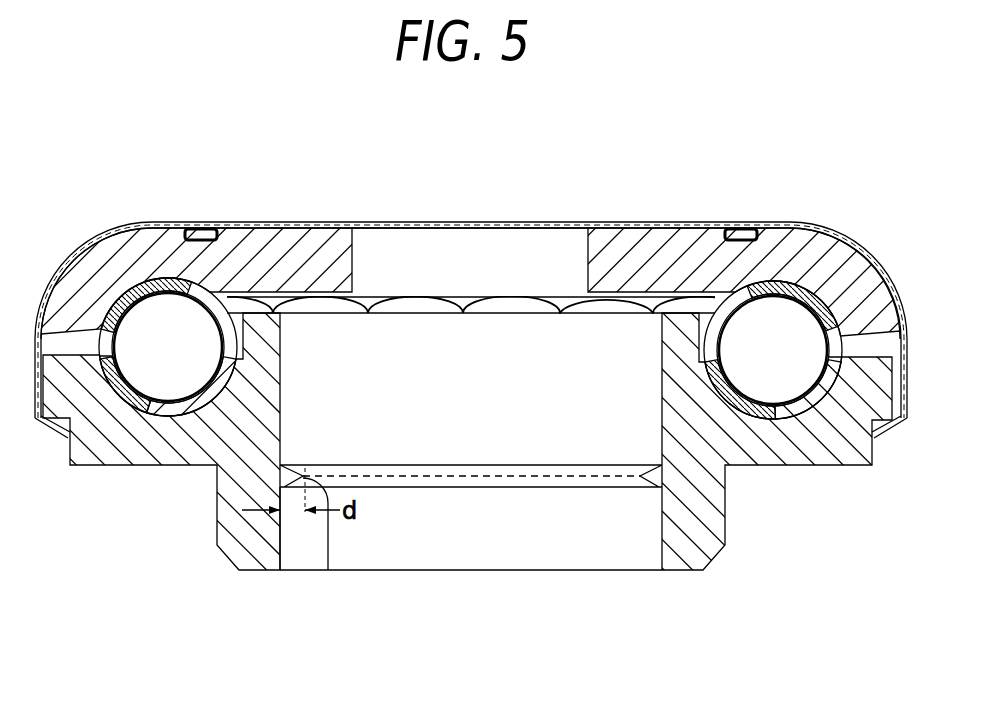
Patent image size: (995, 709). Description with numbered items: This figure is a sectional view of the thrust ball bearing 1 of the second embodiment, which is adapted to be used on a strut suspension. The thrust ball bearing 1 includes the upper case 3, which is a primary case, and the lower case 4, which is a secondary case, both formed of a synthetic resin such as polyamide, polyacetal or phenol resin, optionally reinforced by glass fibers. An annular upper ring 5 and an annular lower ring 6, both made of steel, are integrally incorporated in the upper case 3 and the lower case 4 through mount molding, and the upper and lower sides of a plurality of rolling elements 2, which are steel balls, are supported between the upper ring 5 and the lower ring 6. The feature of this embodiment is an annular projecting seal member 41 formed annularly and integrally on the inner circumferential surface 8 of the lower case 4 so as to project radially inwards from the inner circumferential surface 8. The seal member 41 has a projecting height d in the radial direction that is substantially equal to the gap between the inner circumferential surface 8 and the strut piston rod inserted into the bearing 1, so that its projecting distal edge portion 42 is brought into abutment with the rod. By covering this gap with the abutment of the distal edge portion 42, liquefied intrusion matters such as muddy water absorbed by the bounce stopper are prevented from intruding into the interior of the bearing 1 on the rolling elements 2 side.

The thrust ball bearing 1 is at (720, 203).
The rolling elements 2 is at (152, 318).
The upper case 3 is at (331, 233).
The lower case 4 is at (165, 455).
The upper ring 5 is at (168, 288).
The lower ring 6 is at (147, 413).
The inner circumferential surface 8 is at (282, 545).
The annular projecting seal member 41 is at (608, 487).
The projecting distal edge portion 42 is at (327, 540).